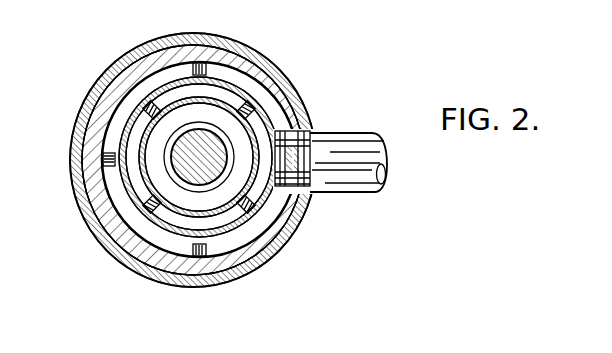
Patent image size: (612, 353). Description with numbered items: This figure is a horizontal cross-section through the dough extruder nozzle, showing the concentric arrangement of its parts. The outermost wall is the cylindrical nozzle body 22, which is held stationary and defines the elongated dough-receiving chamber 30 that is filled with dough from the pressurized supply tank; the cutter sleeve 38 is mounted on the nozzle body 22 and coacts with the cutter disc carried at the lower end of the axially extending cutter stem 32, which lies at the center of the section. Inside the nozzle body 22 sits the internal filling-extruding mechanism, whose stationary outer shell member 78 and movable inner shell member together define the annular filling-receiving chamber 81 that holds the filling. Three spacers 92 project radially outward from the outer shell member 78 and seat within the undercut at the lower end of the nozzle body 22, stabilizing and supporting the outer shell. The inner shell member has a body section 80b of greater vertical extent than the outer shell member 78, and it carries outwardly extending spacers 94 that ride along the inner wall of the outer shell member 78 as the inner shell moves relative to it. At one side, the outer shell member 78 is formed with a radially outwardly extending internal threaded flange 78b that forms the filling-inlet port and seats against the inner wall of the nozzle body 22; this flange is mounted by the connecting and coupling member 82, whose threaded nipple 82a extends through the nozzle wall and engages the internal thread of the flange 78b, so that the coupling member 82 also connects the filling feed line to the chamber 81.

The nozzle body 22 is at (97, 120).
The dough-receiving chamber 30 is at (150, 78).
The cutter stem 32 is at (195, 179).
The cutter sleeve 38 is at (86, 103).
The outer shell member 78 is at (99, 89).
The internal threaded flange 78b is at (292, 121).
The body section 80b is at (159, 124).
The filling-receiving chamber 81 is at (119, 181).
The connecting and coupling member 82 is at (366, 193).
The threaded nipple 82a is at (307, 147).
The spacers 92 is at (191, 63).
The spacers 94 is at (153, 173).